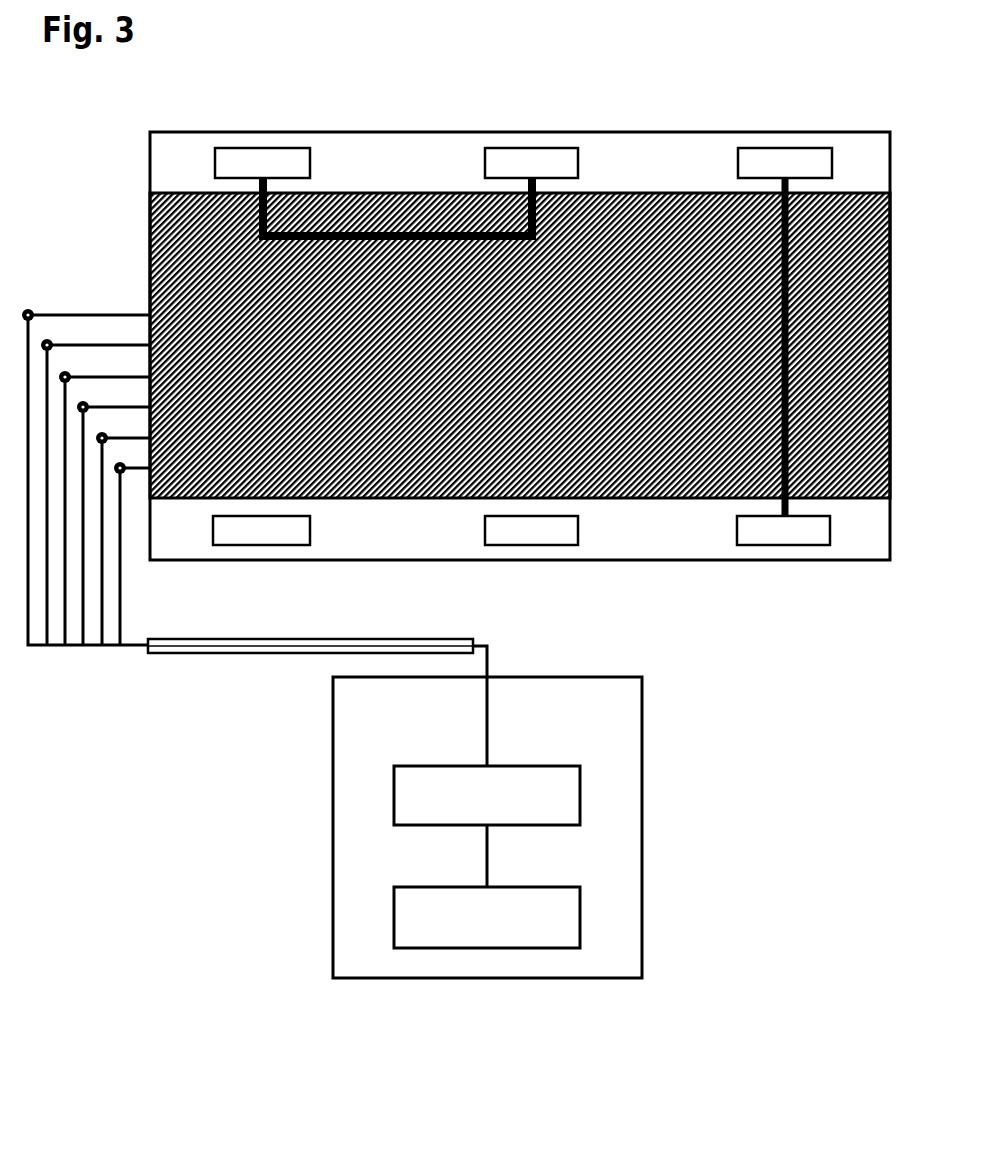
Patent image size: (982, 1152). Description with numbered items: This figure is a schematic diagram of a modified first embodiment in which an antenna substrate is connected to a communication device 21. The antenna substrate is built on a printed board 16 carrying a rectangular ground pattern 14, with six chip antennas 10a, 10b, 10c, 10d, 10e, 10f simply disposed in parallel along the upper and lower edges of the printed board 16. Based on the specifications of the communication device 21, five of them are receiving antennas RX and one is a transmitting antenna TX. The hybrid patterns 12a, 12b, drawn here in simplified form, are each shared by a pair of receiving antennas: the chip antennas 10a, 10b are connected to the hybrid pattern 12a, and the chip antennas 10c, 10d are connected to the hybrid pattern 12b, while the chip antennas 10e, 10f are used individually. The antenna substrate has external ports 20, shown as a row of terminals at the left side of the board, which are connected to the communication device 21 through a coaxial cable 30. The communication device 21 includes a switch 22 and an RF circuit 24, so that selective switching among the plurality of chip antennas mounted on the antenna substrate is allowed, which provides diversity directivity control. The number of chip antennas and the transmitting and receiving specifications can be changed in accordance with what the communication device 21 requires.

The chip antenna 10a is at (257, 148).
The chip antenna 10b is at (536, 148).
The chip antenna 10c is at (790, 148).
The chip antenna 10d is at (785, 545).
The chip antenna 10e is at (532, 545).
The chip antenna 10f is at (263, 545).
The hybrid pattern 12a is at (378, 198).
The hybrid pattern 12b is at (789, 321).
The ground pattern 14 is at (537, 363).
The printed board 16 is at (858, 132).
The external ports 20 is at (97, 315).
The communication device 21 is at (594, 677).
The switch 22 is at (567, 766).
The RF circuit 24 is at (567, 887).
The coaxial cable 30 is at (192, 639).